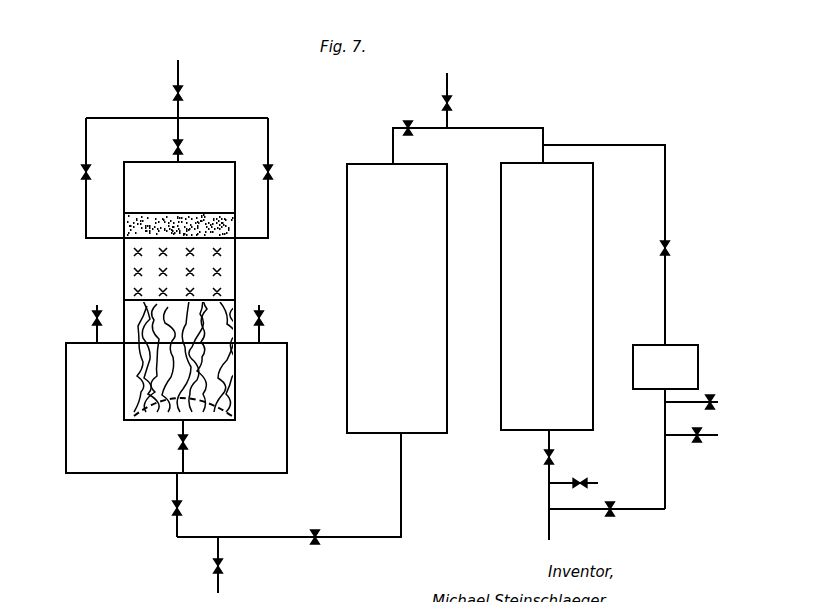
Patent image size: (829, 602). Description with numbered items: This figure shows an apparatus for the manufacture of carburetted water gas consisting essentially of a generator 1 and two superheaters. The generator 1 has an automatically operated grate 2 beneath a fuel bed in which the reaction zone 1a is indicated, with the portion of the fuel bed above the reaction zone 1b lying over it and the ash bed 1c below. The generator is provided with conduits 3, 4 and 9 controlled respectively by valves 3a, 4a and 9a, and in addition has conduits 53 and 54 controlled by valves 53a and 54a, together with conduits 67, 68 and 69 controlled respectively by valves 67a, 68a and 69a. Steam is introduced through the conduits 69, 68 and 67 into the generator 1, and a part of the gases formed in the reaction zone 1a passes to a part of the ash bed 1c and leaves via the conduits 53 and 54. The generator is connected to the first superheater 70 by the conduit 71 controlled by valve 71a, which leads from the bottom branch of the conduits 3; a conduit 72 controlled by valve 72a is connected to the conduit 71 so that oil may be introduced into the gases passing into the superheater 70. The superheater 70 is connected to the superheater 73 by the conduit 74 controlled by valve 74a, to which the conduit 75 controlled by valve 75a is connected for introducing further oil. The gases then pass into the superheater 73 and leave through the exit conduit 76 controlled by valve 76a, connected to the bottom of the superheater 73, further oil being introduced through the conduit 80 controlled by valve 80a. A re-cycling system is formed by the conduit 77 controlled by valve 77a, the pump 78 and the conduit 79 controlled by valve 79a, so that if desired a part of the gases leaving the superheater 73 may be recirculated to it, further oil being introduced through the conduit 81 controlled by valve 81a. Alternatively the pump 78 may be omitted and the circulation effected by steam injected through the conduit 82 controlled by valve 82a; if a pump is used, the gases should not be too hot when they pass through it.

The generator 1 is at (166, 291).
The reaction zone 1a is at (222, 269).
The portion of the fuel bed above the reaction zone 1b is at (125, 234).
The ash bed 1c is at (143, 382).
The automatically operated grate 2 is at (157, 413).
The conduit 3 is at (197, 488).
The valve 3a is at (173, 507).
The conduit 4 is at (178, 428).
The valve 4a is at (188, 443).
The conduit 9 is at (178, 133).
The valve 9a is at (181, 146).
The conduit 53 is at (96, 333).
The valve 53a is at (94, 316).
The conduit 54 is at (262, 333).
The valve 54a is at (262, 316).
The conduit 67 is at (272, 200).
The valve 67a is at (271, 170).
The conduit 68 is at (86, 212).
The valve 68a is at (83, 173).
The conduit 69 is at (178, 72).
The valve 69a is at (182, 92).
The first superheater 70 is at (347, 352).
The conduit 71 is at (252, 540).
The valve 71a is at (318, 532).
The conduit 72 is at (215, 542).
The valve 72a is at (223, 567).
The superheater 73 is at (528, 296).
The conduit 74 is at (404, 126).
The valve 74a is at (412, 131).
The conduit 75 is at (450, 127).
The valve 75a is at (450, 102).
The exit conduit 76 is at (547, 440).
The valve 76a is at (553, 458).
The conduit 77 is at (622, 512).
The valve 77a is at (608, 513).
The pump 78 is at (643, 345).
The conduit 79 is at (668, 283).
The valve 79a is at (668, 245).
The conduit 80 is at (549, 483).
The valve 80a is at (583, 481).
The conduit 81 is at (665, 435).
The valve 81a is at (697, 442).
The conduit 82 is at (672, 402).
The valve 82a is at (706, 398).